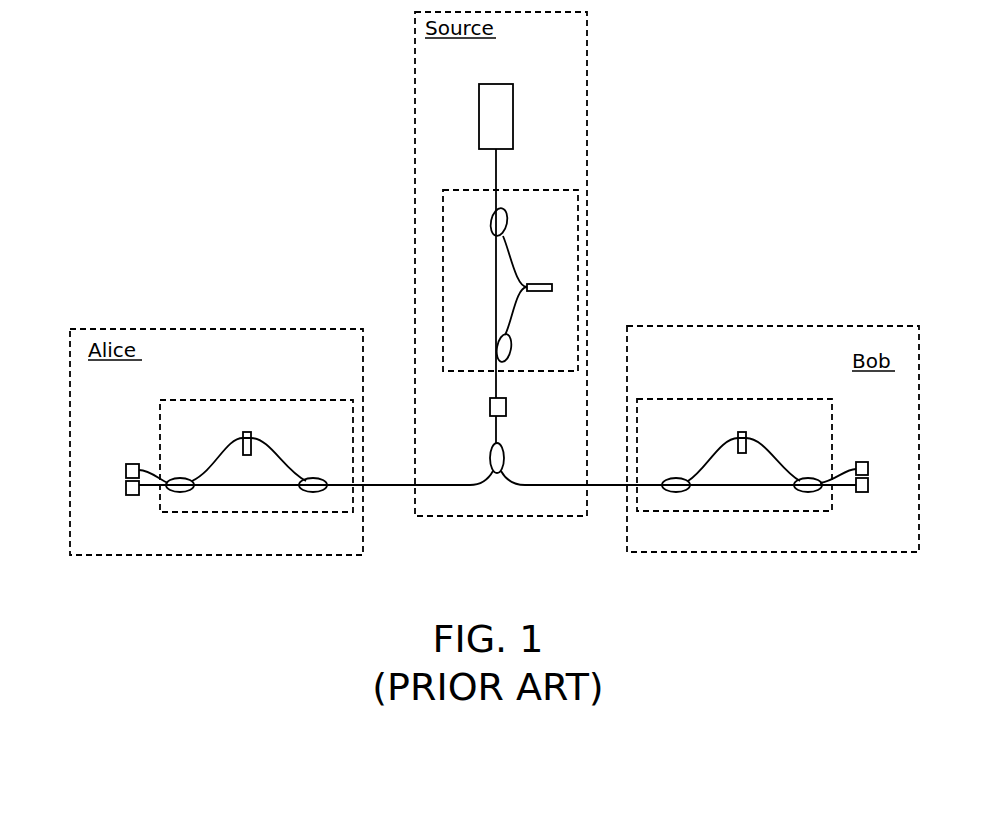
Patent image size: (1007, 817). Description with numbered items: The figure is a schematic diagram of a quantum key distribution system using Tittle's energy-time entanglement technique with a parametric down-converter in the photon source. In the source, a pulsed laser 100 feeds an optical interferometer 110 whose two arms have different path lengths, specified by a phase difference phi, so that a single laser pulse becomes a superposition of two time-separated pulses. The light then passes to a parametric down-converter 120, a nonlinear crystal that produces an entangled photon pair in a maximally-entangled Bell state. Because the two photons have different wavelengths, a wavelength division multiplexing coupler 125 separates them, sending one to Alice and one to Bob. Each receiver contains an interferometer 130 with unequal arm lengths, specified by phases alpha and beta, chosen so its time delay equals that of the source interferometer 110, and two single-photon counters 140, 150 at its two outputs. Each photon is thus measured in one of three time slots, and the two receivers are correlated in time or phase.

The pulsed laser 100 is at (493, 84).
The optical interferometer 110 is at (490, 189).
The parametric down-converter 120 is at (490, 398).
The coupler 125 is at (492, 448).
The interferometer 130 is at (280, 513).
The single-photon counter 140 is at (132, 495).
The single-photon counter 150 is at (132, 464).